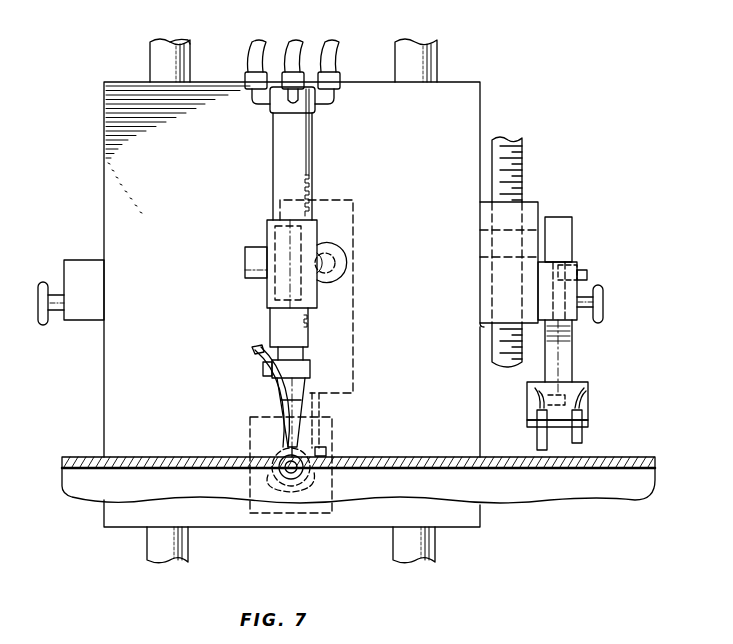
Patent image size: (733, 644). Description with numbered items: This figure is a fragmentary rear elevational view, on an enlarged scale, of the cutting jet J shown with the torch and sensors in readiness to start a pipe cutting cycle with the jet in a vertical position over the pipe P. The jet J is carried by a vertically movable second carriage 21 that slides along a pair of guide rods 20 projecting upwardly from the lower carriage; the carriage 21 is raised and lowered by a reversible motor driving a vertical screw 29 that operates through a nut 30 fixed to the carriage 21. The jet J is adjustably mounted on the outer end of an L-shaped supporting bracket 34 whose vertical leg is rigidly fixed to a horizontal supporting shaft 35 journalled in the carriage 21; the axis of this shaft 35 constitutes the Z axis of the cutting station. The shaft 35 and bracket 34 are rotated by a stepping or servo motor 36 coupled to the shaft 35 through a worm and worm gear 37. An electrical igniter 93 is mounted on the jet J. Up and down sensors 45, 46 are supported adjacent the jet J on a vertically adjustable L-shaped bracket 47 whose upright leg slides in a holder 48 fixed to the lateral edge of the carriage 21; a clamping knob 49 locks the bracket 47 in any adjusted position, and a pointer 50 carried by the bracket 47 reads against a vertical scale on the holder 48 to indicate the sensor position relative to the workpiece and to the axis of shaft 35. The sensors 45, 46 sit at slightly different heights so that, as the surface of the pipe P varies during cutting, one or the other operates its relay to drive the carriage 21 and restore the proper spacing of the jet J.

The guide rods 20 is at (151, 543).
The vertically movable second carriage 21 is at (103, 157).
The vertical screw 29 is at (522, 165).
The nut 30 is at (480, 236).
The L-shaped supporting bracket 34 is at (270, 333).
The horizontal supporting shaft 35 is at (262, 480).
The stepping or servo motor 36 is at (353, 330).
The worm and worm gear 37 is at (328, 476).
The up sensor 45 is at (577, 443).
The down sensor 46 is at (541, 450).
The vertically adjustable bracket 47 is at (562, 359).
The holder 48 is at (73, 258).
The clamping knob 49 is at (42, 328).
The pointer 50 is at (588, 272).
The electrical igniter 93 is at (280, 390).
The cutting jet J is at (300, 408).
The pipe P is at (76, 456).